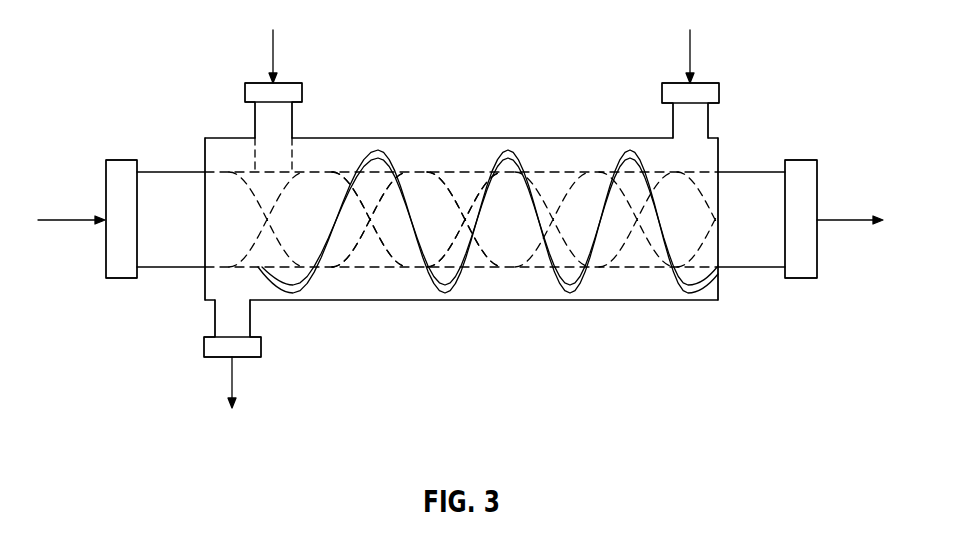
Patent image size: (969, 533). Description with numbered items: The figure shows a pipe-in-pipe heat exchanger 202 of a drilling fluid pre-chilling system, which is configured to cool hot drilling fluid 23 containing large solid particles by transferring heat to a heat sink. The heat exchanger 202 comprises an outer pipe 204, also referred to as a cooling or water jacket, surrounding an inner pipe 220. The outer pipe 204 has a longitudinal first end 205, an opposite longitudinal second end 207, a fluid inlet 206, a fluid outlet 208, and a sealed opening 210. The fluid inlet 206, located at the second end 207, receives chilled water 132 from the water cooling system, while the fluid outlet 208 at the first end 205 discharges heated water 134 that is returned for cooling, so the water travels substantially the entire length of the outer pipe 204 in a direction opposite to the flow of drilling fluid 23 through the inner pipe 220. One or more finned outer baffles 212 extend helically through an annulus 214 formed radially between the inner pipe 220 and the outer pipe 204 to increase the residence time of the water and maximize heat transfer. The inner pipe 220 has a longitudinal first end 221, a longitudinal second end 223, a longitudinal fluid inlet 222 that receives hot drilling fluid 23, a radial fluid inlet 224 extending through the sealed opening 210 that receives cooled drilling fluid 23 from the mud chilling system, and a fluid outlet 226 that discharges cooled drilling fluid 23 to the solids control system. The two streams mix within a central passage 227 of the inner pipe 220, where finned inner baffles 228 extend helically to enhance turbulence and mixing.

The pipe-in-pipe heat exchanger 202 is at (462, 212).
The outer pipe 204 is at (575, 302).
The first end 205 is at (203, 290).
The second end 207 is at (720, 296).
The fluid inlet 206 is at (720, 92).
The fluid outlet 208 is at (262, 347).
The sealed opening 210 is at (294, 138).
The finned outer baffles 212 is at (387, 150).
The annulus 214 is at (558, 158).
The inner pipe 220 is at (735, 185).
The first end 221 is at (120, 160).
The longitudinal fluid inlet 222 is at (115, 258).
The second end 223 is at (820, 183).
The radial fluid inlet 224 is at (304, 92).
The fluid outlet 226 is at (800, 172).
The central passage 227 is at (473, 257).
The finned inner baffles 228 is at (393, 258).
The drilling fluid 23 is at (73, 220).
The chilled water 132 is at (692, 40).
The heated water 134 is at (234, 380).